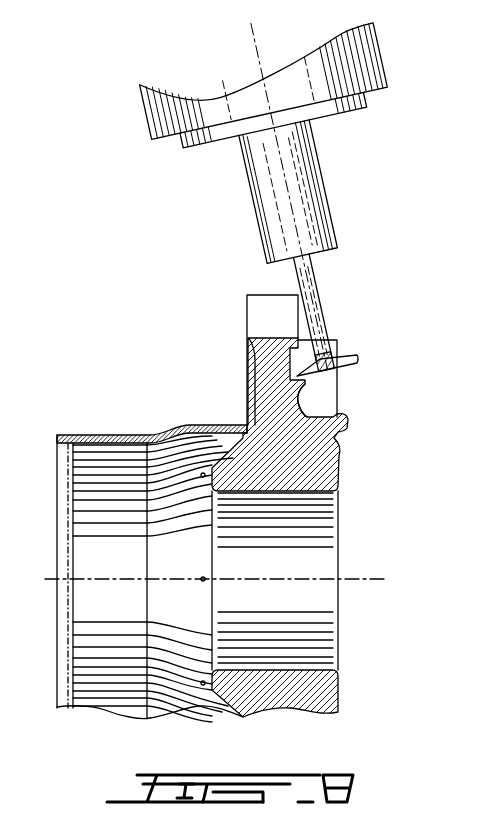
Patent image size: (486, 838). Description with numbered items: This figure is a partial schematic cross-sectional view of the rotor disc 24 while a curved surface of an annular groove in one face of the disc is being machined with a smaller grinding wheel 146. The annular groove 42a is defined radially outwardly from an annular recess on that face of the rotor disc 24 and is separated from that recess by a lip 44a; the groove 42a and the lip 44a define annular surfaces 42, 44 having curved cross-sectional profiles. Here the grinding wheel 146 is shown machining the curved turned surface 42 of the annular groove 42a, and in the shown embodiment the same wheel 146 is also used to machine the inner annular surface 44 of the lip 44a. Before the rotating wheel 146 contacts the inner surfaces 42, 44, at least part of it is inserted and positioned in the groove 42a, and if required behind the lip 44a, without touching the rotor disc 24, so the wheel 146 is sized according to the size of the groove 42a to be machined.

The rotor disc 24 is at (147, 395).
The inner annular surface of the lip 44 is at (252, 348).
The lip 44a is at (300, 392).
The grinding wheel 146 is at (362, 358).
The curved turned surface of the annular groove 42 is at (315, 352).
The annular groove 42a is at (323, 357).